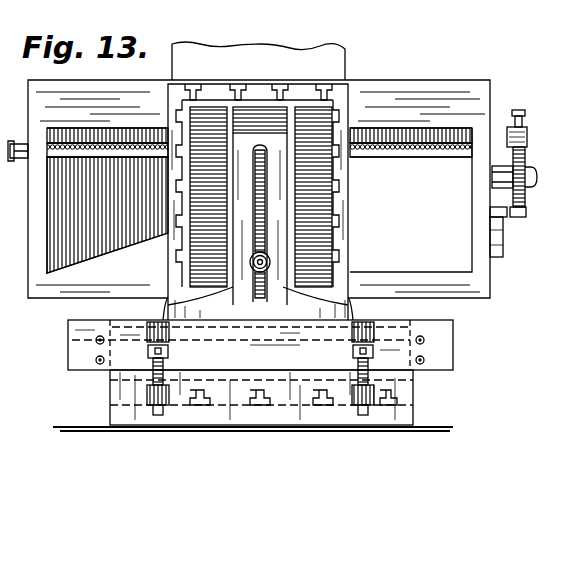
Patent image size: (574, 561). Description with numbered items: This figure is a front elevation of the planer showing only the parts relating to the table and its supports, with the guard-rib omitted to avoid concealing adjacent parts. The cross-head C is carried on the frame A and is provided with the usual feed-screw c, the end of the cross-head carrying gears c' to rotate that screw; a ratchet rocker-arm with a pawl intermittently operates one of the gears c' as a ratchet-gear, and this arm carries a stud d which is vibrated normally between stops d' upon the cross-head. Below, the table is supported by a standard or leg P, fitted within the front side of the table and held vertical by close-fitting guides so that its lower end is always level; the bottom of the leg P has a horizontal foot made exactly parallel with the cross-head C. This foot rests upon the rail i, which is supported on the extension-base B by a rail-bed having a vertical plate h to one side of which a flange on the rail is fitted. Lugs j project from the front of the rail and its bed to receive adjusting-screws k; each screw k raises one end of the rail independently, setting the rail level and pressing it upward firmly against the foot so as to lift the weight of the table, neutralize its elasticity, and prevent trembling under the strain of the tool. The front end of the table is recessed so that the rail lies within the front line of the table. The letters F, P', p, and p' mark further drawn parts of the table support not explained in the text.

The upper frame / shaft support (broken away) A is at (258, 48).
The toothed chain or rack c is at (259, 159).
The worm gear c' is at (525, 177).
The bracket d is at (520, 226).
The lower bracket d' is at (511, 241).
The central frame F is at (350, 200).
The left coil / pole piece P is at (193, 206).
The right coil / pole piece P' is at (330, 206).
The casing compartment C is at (411, 200).
The central slotted slide p is at (260, 206).
The pivot pin p' is at (268, 277).
The bolt head j is at (150, 335).
The adjusting bolt k is at (170, 362).
The supporting bar h is at (297, 341).
The bolt holes i is at (440, 324).
The base B is at (417, 408).